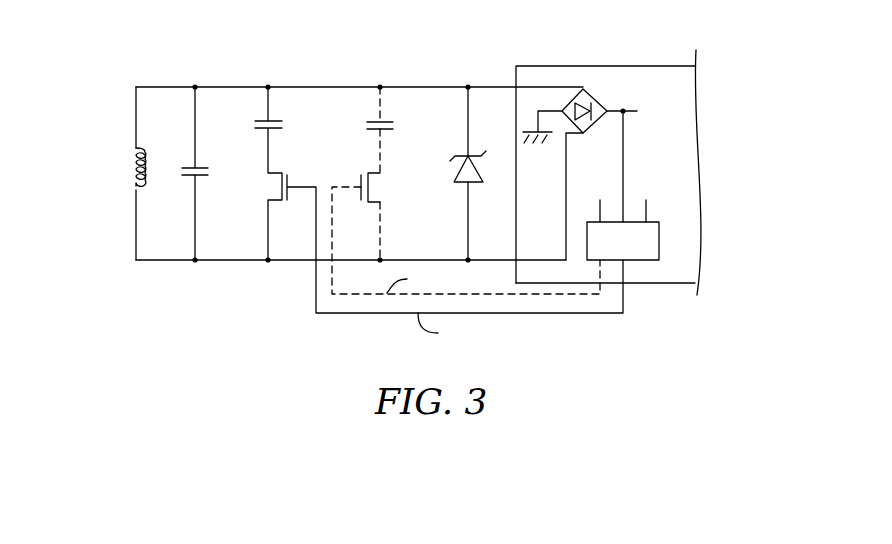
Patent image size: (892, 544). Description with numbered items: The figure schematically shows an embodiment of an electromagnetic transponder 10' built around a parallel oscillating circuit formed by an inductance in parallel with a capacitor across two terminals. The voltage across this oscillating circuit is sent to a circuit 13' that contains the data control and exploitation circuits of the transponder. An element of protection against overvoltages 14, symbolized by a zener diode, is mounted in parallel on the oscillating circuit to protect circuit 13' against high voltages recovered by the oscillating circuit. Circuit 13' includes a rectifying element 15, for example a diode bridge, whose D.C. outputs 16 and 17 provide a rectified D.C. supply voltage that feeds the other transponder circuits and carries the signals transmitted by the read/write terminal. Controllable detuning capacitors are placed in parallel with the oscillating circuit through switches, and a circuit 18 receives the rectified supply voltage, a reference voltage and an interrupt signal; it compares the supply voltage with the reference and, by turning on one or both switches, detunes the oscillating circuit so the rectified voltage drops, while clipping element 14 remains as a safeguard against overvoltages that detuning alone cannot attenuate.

The transponder 10' is at (361, 213).
The circuit 13' is at (608, 152).
The element of protection against overvoltages 14 is at (478, 157).
The rectifying element 15 is at (597, 97).
The D.C. output 16 is at (625, 108).
The D.C. output 17 is at (551, 110).
The circuit 18 is at (640, 262).